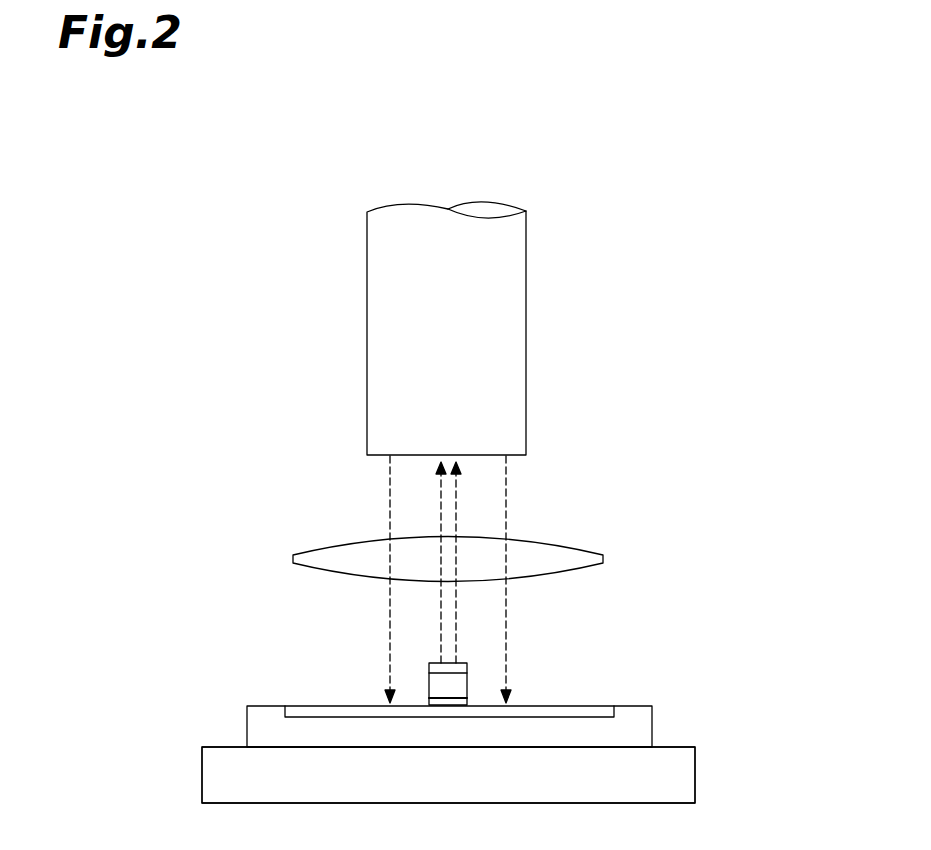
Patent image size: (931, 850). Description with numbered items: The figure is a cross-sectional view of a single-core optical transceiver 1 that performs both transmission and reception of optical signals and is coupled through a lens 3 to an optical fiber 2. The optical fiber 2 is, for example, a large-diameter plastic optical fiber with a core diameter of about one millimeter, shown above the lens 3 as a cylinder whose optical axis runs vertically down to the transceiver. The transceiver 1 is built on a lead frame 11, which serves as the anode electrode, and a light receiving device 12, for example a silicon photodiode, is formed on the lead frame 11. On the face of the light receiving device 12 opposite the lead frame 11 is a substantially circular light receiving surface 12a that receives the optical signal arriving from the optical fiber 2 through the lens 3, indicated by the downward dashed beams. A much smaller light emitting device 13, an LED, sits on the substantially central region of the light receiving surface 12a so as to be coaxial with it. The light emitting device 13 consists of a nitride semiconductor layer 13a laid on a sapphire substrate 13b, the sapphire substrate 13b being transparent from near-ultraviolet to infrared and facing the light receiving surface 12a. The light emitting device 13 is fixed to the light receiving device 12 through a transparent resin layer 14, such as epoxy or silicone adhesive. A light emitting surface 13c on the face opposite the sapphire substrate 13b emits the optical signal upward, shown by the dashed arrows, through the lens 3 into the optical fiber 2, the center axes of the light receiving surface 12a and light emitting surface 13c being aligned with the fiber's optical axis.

The single-core optical transceiver 1 is at (160, 600).
The optical fiber 2 is at (367, 272).
The lens 3 is at (310, 549).
The lead frame 11 is at (695, 780).
The light receiving device 12 is at (671, 693).
The light receiving surface 12a is at (325, 706).
The light emitting device 13 is at (478, 657).
The nitride semiconductor layer 13a is at (437, 663).
The sapphire substrate 13b is at (458, 684).
The light emitting surface 13c is at (460, 663).
The resin layer 14 is at (443, 703).